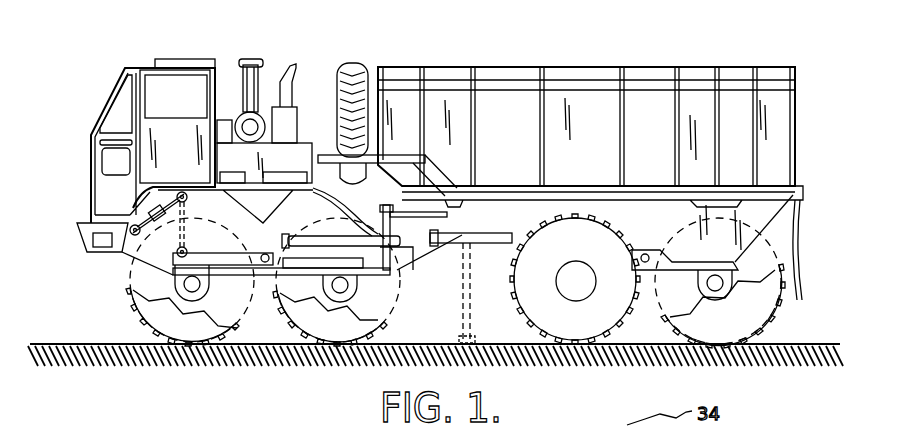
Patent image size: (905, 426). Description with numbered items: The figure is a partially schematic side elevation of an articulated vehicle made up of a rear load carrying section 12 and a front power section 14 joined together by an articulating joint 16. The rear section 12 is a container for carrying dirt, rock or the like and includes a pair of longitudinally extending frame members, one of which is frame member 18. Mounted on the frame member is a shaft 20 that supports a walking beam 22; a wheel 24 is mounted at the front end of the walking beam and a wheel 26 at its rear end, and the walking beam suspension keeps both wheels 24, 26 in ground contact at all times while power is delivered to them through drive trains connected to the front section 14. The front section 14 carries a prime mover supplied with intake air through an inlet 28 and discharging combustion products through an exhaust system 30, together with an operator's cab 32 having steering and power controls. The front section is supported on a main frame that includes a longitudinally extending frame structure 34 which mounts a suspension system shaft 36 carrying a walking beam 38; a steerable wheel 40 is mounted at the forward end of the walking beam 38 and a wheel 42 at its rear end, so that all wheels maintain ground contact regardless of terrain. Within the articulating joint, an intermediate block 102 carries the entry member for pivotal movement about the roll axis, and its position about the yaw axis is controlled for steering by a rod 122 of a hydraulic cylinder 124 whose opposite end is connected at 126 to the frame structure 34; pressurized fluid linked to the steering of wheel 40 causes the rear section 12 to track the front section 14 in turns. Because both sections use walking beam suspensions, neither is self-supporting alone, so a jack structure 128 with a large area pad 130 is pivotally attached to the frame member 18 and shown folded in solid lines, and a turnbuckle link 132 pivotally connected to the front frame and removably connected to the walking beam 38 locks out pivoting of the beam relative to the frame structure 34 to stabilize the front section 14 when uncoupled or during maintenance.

The rear load carrying section 12 is at (600, 63).
The front power section 14 is at (140, 57).
The articulating joint 16 is at (422, 261).
The frame member 18 is at (517, 229).
The shaft 20 is at (645, 253).
The walking beam 22 is at (650, 272).
The wheel 24 is at (586, 326).
The wheel 26 is at (726, 339).
The inlet 28 is at (253, 60).
The exhaust system 30 is at (289, 114).
The operator's cab 32 is at (187, 152).
The frame structure 34 is at (273, 214).
The suspension system shaft 36 is at (251, 252).
The walking beam 38 is at (265, 266).
The wheel 40 is at (178, 319).
The wheel 42 is at (349, 334).
The intermediate block 102 is at (402, 270).
The rod 122 is at (420, 244).
The hydraulic cylinder 124 is at (349, 245).
The connection 126 is at (283, 238).
The jack structure 128 is at (476, 248).
The pad 130 is at (477, 341).
The turnbuckle link 132 is at (165, 222).